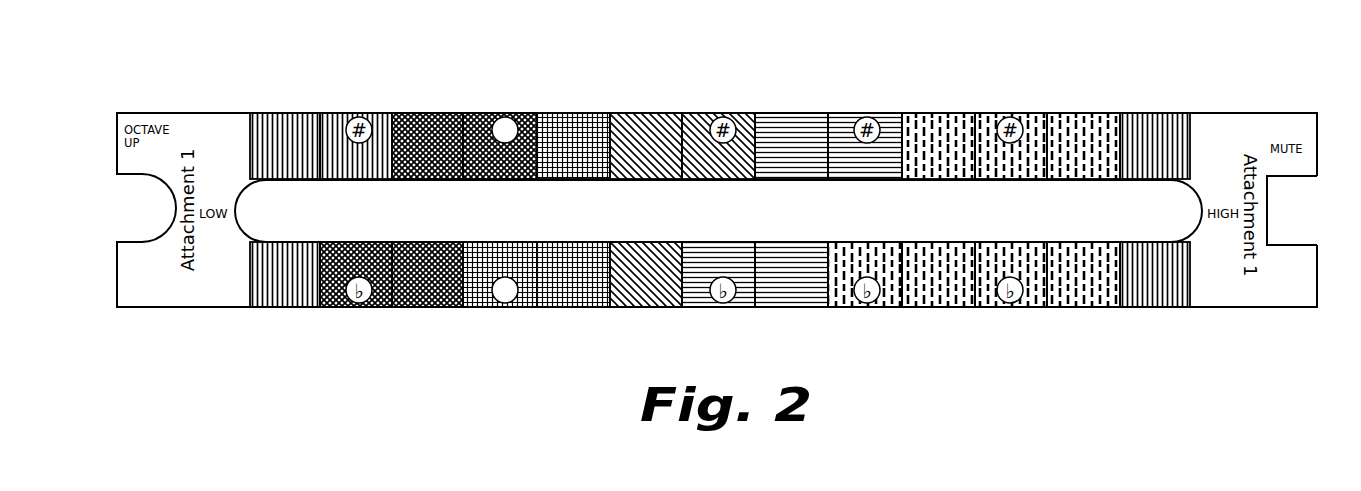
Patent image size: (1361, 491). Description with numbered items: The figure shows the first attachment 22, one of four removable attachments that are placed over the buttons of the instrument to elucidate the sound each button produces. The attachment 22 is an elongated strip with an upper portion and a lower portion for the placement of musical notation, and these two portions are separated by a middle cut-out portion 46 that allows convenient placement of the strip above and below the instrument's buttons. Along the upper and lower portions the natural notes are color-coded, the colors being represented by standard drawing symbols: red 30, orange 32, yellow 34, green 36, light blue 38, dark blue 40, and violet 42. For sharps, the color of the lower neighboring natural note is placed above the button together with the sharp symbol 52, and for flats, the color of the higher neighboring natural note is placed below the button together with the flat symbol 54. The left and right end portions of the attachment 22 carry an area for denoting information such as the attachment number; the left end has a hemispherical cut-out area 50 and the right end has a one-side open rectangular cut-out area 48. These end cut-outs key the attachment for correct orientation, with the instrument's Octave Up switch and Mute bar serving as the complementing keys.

The attachment 1 22 is at (216, 160).
The red color region 30 is at (283, 112).
The orange color region 32 is at (457, 307).
The yellow color region 34 is at (583, 113).
The green color region 36 is at (665, 305).
The light blue color region 38 is at (804, 128).
The dark blue color region 40 is at (943, 305).
The violet color region 42 is at (1087, 125).
The cut-out portion 46 is at (728, 222).
The rectangular cut-out area 48 is at (1295, 230).
The hemispherical cut-out area 50 is at (140, 210).
The sharp symbol 52 is at (497, 115).
The flat symbol 54 is at (515, 305).